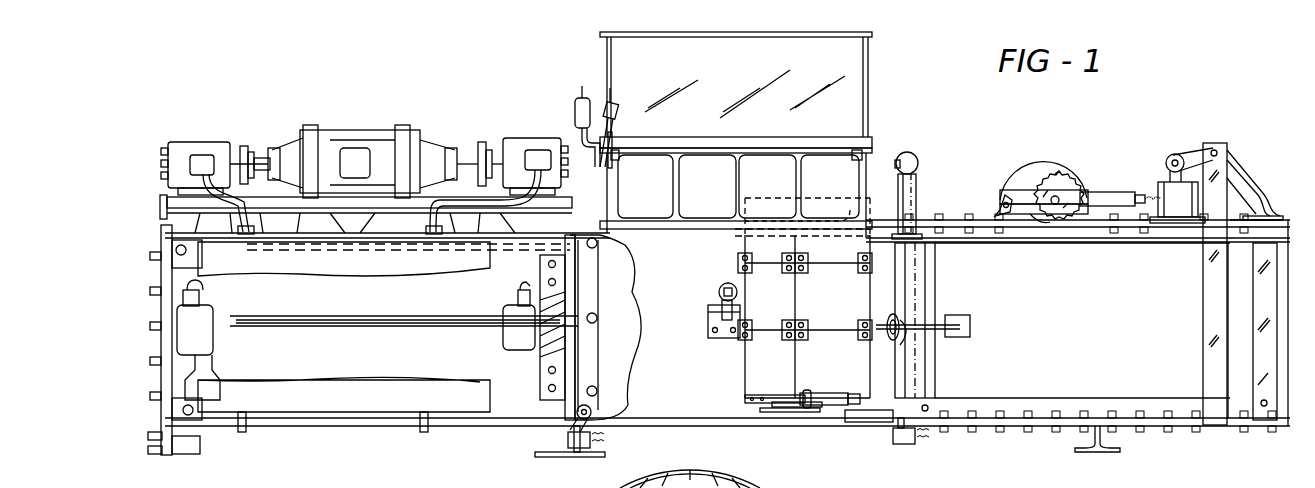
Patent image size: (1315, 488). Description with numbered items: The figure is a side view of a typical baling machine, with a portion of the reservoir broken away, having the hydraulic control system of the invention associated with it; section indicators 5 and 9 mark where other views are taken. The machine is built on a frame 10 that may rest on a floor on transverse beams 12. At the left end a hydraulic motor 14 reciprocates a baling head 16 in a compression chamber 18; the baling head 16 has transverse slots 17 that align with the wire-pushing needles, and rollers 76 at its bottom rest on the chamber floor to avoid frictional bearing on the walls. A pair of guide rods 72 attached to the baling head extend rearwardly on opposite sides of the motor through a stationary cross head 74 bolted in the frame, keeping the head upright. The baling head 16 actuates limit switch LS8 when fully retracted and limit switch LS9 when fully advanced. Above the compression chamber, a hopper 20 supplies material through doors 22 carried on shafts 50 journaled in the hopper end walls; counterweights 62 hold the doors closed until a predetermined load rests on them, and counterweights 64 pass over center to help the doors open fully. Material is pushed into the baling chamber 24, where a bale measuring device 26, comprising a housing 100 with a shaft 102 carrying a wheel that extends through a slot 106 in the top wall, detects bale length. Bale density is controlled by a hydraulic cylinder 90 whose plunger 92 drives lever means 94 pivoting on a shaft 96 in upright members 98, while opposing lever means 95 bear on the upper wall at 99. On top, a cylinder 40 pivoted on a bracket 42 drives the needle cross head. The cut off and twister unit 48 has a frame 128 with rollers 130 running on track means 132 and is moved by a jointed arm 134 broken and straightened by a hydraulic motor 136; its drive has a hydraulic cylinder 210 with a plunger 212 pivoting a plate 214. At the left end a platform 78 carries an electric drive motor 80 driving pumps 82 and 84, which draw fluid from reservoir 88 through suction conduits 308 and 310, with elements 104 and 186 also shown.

The frame 10 is at (514, 428).
The transverse beams 12 is at (548, 456).
The hydraulic motor 14 is at (340, 318).
The baling head 16 is at (592, 358).
The transverse slots 17 is at (597, 244).
The compression chamber 18 is at (627, 293).
The hopper 20 is at (855, 98).
The doors 22 is at (838, 168).
The baling chamber 24 is at (1050, 329).
The bale measuring device 26 is at (1057, 164).
The cylinder 40 is at (916, 158).
The bracket 42 is at (918, 195).
The cut off and twister unit 48 is at (735, 261).
The shafts 50 is at (617, 152).
The counterweights 62 is at (575, 118).
The counterweights 64 is at (614, 115).
The guide rods 72 is at (263, 326).
The stationary cross head 74 is at (548, 345).
The rollers 76 is at (586, 419).
The platform 78 is at (560, 210).
The electric drive motor 80 is at (325, 145).
The pump 82 is at (202, 150).
The pump 84 is at (520, 140).
The fluid reservoir 88 is at (330, 252).
The hydraulic cylinder 90 is at (1165, 192).
The plunger 92 is at (1213, 147).
The lever means 94 is at (1175, 155).
The lever means 95 is at (1247, 186).
The shaft 96 is at (1218, 153).
The upright members 98 is at (1247, 200).
The bearing point 99 is at (1280, 221).
The housing 100 is at (1108, 192).
The shaft 102 is at (1052, 205).
The saw blade 104 is at (1058, 220).
The slot 106 is at (1072, 218).
The frame 128 is at (790, 310).
The rollers 130 is at (718, 294).
The track means 132 is at (708, 313).
The jointed arm 134 is at (930, 340).
The hydraulic motor 136 is at (900, 344).
The plate 186 is at (750, 415).
The hydraulic cylinder 210 is at (840, 406).
The plunger 212 is at (793, 408).
The plate 214 is at (772, 412).
The suction conduit 308 is at (252, 207).
The suction conduit 310 is at (450, 207).
The section line 5 is at (173, 220).
The section line 9 is at (730, 253).
The limit switch LS8 is at (578, 448).
The limit switch LS9 is at (908, 444).